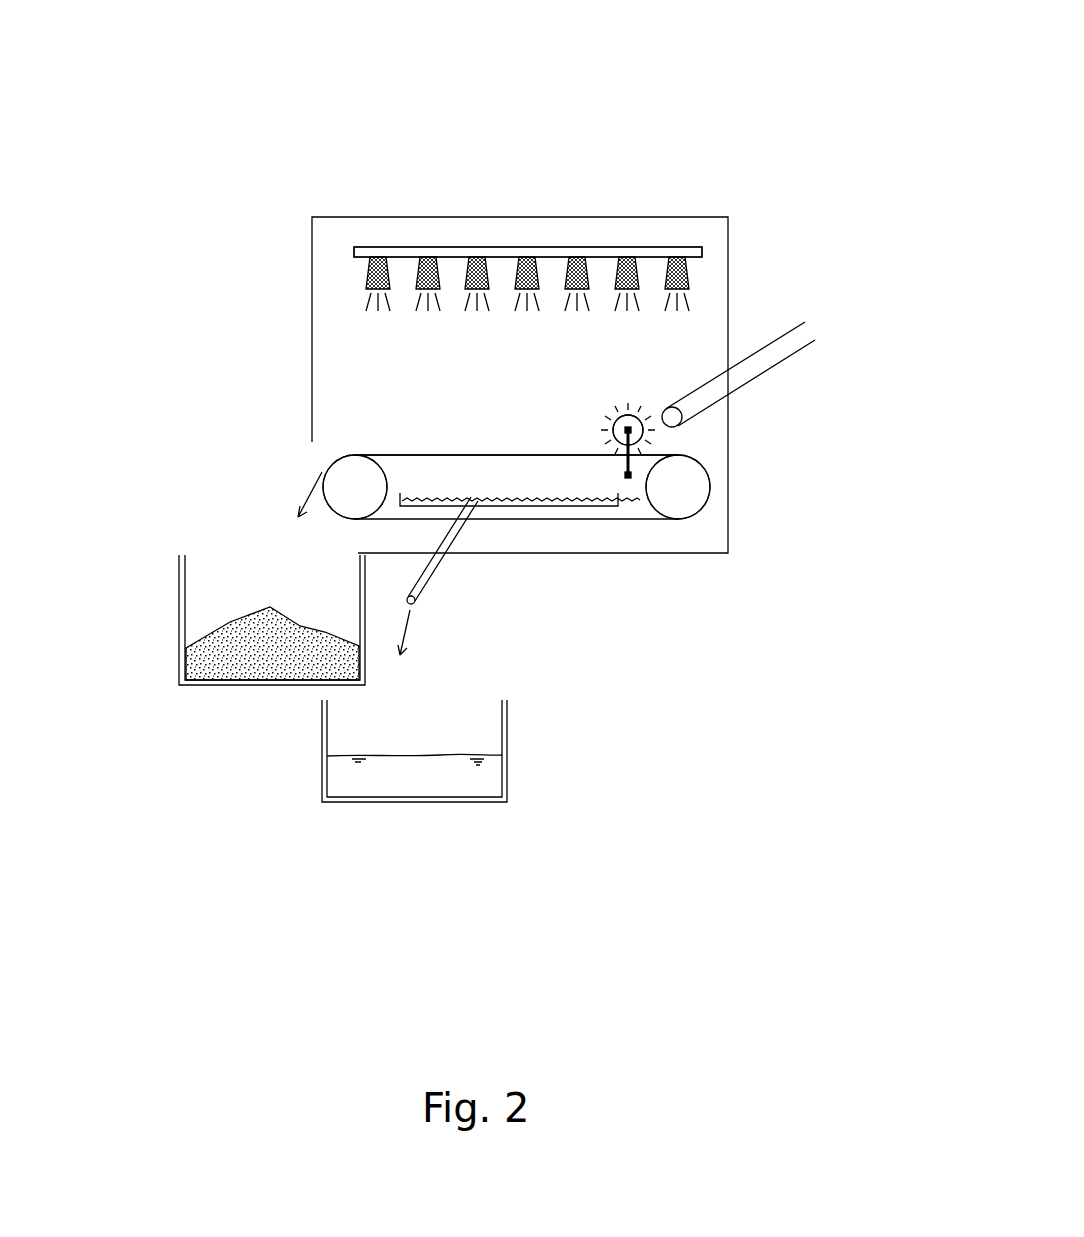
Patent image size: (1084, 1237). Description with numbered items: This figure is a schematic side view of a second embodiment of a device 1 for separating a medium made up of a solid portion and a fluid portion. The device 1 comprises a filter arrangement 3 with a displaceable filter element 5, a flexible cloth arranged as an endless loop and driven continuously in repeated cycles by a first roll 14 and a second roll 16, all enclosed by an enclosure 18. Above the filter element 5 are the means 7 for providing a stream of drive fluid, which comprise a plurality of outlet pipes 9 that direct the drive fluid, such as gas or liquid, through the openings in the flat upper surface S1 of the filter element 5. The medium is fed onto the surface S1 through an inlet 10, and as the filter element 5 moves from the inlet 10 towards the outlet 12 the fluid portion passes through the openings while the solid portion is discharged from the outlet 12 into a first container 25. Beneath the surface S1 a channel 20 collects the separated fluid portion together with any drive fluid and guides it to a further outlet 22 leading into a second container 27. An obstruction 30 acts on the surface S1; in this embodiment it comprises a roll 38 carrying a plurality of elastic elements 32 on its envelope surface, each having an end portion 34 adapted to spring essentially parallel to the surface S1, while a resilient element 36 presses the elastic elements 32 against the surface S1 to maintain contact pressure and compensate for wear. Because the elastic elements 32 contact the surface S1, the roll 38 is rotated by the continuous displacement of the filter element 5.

The device 1 is at (214, 125).
The filter arrangement 3 is at (655, 555).
The filter element 5 is at (406, 455).
The means for providing a stream of drive fluid 7 is at (647, 250).
The outlet pipes 9 is at (425, 292).
The inlet 10 is at (790, 336).
The outlet 12 is at (302, 467).
The first roll 14 is at (708, 503).
The second roll 16 is at (334, 468).
The enclosure 18 is at (312, 253).
The channel 20 is at (555, 507).
The further outlet 22 is at (437, 572).
The first container 25 is at (179, 619).
The second container 27 is at (507, 727).
The obstruction 30 is at (700, 340).
The elastic element 32 is at (614, 417).
The end portion 34 is at (597, 456).
The resilient element 36 is at (636, 459).
The roll 38 is at (620, 398).
The upper surface S1 is at (484, 455).